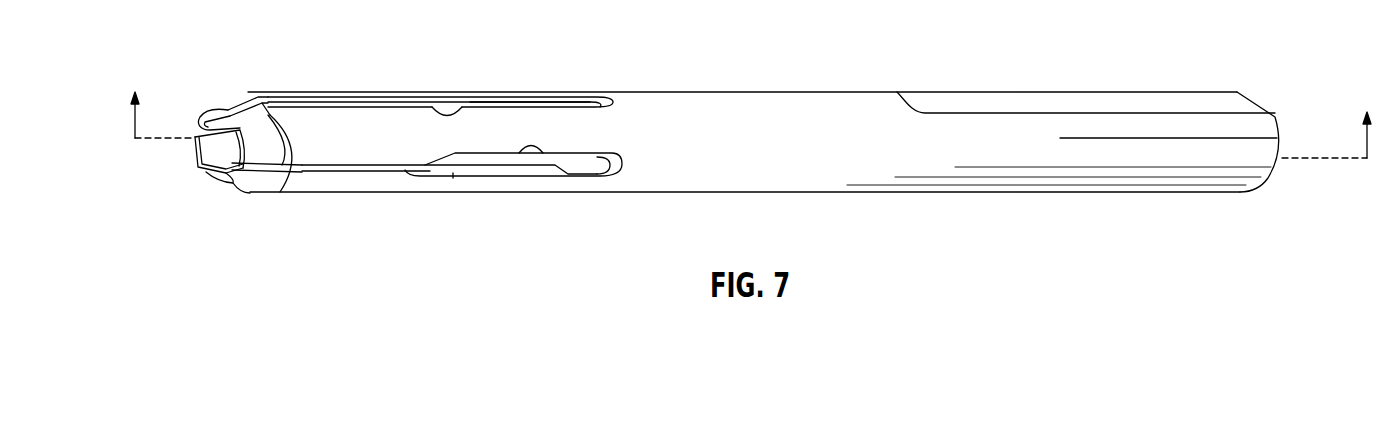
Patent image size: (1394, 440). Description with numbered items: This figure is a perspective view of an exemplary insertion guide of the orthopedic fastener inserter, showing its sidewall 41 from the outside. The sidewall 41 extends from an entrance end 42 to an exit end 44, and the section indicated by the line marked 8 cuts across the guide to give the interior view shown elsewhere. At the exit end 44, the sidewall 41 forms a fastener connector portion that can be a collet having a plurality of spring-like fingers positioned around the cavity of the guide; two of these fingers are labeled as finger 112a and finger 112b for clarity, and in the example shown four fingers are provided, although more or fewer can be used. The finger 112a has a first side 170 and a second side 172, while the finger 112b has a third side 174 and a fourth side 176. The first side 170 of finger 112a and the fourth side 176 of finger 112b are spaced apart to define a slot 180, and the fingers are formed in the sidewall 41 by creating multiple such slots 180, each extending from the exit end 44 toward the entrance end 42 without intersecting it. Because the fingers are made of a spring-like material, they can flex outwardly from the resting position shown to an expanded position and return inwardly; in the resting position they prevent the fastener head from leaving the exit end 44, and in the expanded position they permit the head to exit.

The section line 8- 8 is at (751, 110).
The sidewall 41 is at (785, 90).
The entrance end 42 is at (1277, 121).
The exit end 44 is at (222, 178).
The finger 112a is at (228, 112).
The finger 112b is at (268, 137).
The first side 170 is at (334, 95).
The second side 172 is at (202, 133).
The third side 174 is at (520, 154).
The fourth side 176 is at (458, 93).
The slot 180 is at (508, 103).